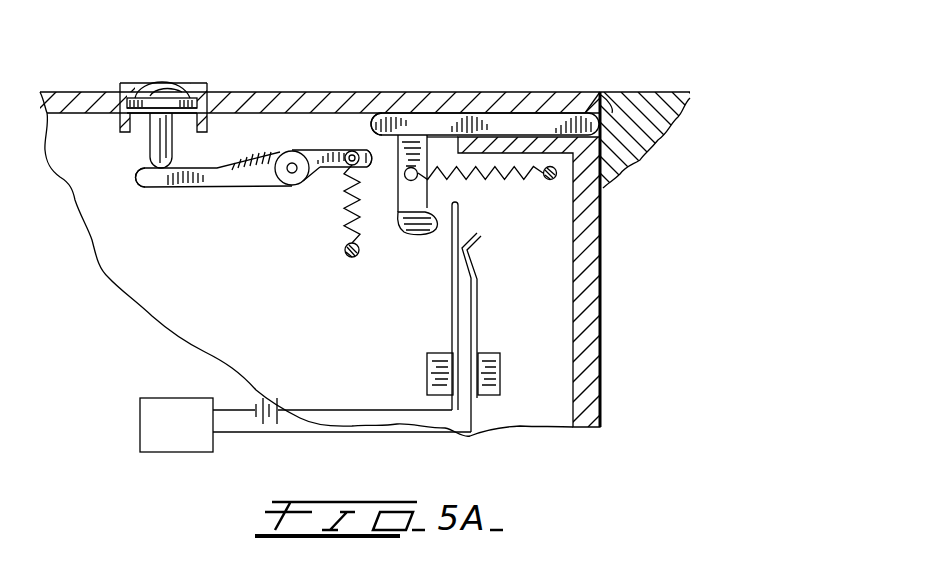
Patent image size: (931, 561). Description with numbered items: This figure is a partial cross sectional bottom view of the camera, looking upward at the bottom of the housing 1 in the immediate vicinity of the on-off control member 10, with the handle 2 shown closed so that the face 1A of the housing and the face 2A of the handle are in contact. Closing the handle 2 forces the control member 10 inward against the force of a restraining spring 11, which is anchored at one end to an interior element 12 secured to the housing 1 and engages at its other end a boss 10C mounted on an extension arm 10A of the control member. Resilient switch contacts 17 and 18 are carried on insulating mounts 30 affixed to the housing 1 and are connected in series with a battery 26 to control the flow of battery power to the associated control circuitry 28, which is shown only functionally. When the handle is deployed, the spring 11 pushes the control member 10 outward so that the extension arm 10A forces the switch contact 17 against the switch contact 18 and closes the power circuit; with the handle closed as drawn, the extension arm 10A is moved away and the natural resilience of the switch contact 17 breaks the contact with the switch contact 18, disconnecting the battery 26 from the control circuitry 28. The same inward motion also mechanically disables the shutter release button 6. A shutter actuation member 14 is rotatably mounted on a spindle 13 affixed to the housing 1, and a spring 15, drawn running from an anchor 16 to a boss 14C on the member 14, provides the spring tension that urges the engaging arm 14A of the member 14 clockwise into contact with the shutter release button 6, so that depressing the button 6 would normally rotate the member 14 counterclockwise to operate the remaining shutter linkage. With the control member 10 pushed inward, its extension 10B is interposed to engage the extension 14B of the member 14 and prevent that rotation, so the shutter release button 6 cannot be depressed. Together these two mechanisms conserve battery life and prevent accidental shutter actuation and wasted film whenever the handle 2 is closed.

The housing 1 is at (78, 93).
The face of housing 1A is at (593, 98).
The handle 2 is at (686, 99).
The face of handle 2A is at (613, 103).
The shutter release button 6 is at (162, 83).
The on-off control member 10 is at (472, 122).
The extension arm 10A is at (432, 236).
The extension of control member 10B is at (391, 116).
The boss 10C is at (410, 181).
The restraining spring 11 is at (490, 180).
The interior element 12 is at (556, 179).
The spindle 13 is at (291, 173).
The shutter actuation member 14 is at (198, 186).
The engaging arm 14A is at (146, 186).
The extension of shutter actuation member 14B is at (380, 168).
The boss 14C is at (349, 165).
The return spring 15 is at (345, 245).
The spring anchor 16 is at (353, 257).
The switch contact 17 is at (451, 303).
The switch contact 18 is at (478, 303).
The battery 26 is at (263, 400).
The control circuitry 28 is at (186, 435).
The insulating mounts 30 is at (427, 371).